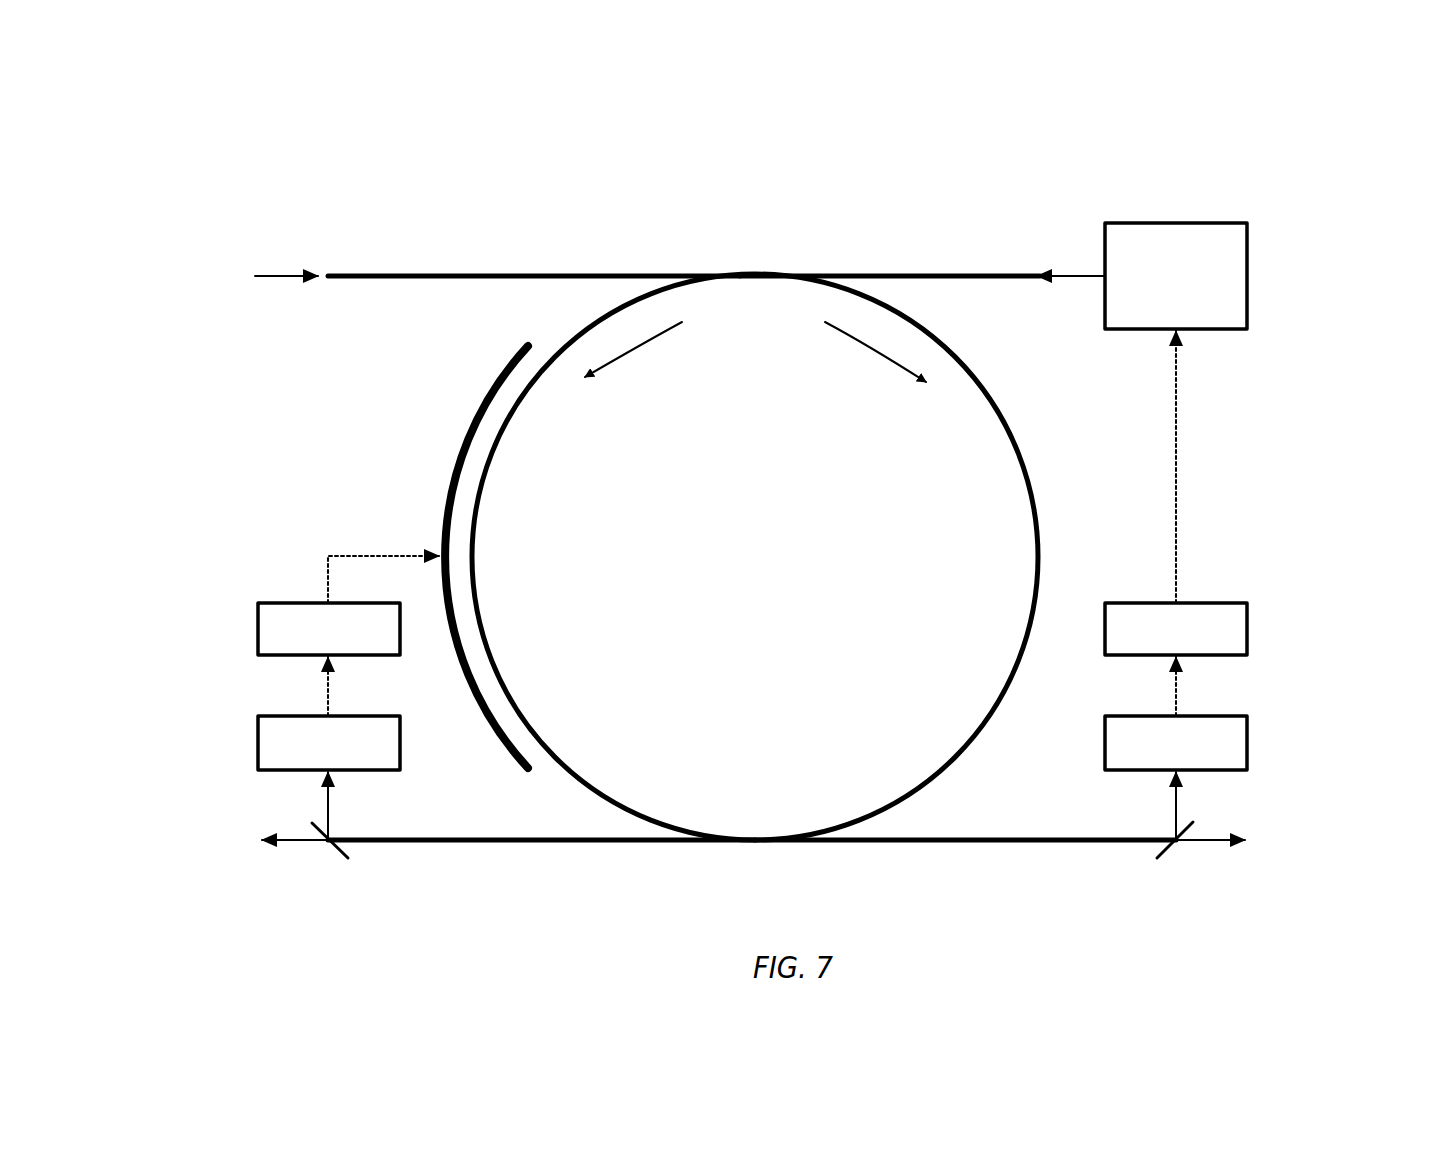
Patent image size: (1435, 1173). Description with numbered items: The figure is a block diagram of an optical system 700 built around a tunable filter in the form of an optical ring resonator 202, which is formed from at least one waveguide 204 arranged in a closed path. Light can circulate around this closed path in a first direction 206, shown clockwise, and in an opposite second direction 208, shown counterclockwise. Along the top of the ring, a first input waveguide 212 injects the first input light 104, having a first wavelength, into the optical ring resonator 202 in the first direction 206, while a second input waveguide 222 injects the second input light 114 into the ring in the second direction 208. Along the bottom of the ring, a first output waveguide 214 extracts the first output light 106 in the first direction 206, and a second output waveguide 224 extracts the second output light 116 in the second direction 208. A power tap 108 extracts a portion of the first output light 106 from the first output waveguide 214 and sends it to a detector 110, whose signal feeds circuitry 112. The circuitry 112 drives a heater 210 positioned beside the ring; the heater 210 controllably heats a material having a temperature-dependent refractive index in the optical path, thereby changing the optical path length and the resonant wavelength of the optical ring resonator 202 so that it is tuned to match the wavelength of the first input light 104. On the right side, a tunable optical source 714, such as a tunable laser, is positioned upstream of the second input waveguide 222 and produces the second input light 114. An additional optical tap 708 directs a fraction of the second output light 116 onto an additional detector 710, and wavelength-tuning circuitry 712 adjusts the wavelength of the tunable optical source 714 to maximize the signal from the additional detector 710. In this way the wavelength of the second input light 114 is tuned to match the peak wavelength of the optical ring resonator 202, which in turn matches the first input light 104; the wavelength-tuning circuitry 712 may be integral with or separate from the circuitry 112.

The optical system 700 is at (205, 268).
The first input light 104 is at (280, 273).
The second input light 114 is at (1075, 273).
The tunable optical source 714 is at (1247, 276).
The first input waveguide 212 is at (733, 258).
The second input waveguide 222 is at (1032, 258).
The second direction 208 is at (620, 350).
The first direction 206 is at (887, 350).
The heater 210 is at (453, 453).
The optical ring resonator 202 is at (473, 556).
The waveguide 204 is at (1017, 658).
The circuitry 112 is at (258, 625).
The detector 110 is at (258, 739).
The power tap 108 is at (312, 825).
The first output light 106 is at (303, 843).
The wavelength-tuning circuitry 712 is at (1247, 628).
The additional detector 710 is at (1247, 742).
The additional optical tap 708 is at (1193, 823).
The second output light 116 is at (1196, 843).
The first output waveguide 214 is at (735, 857).
The second output waveguide 224 is at (1176, 857).